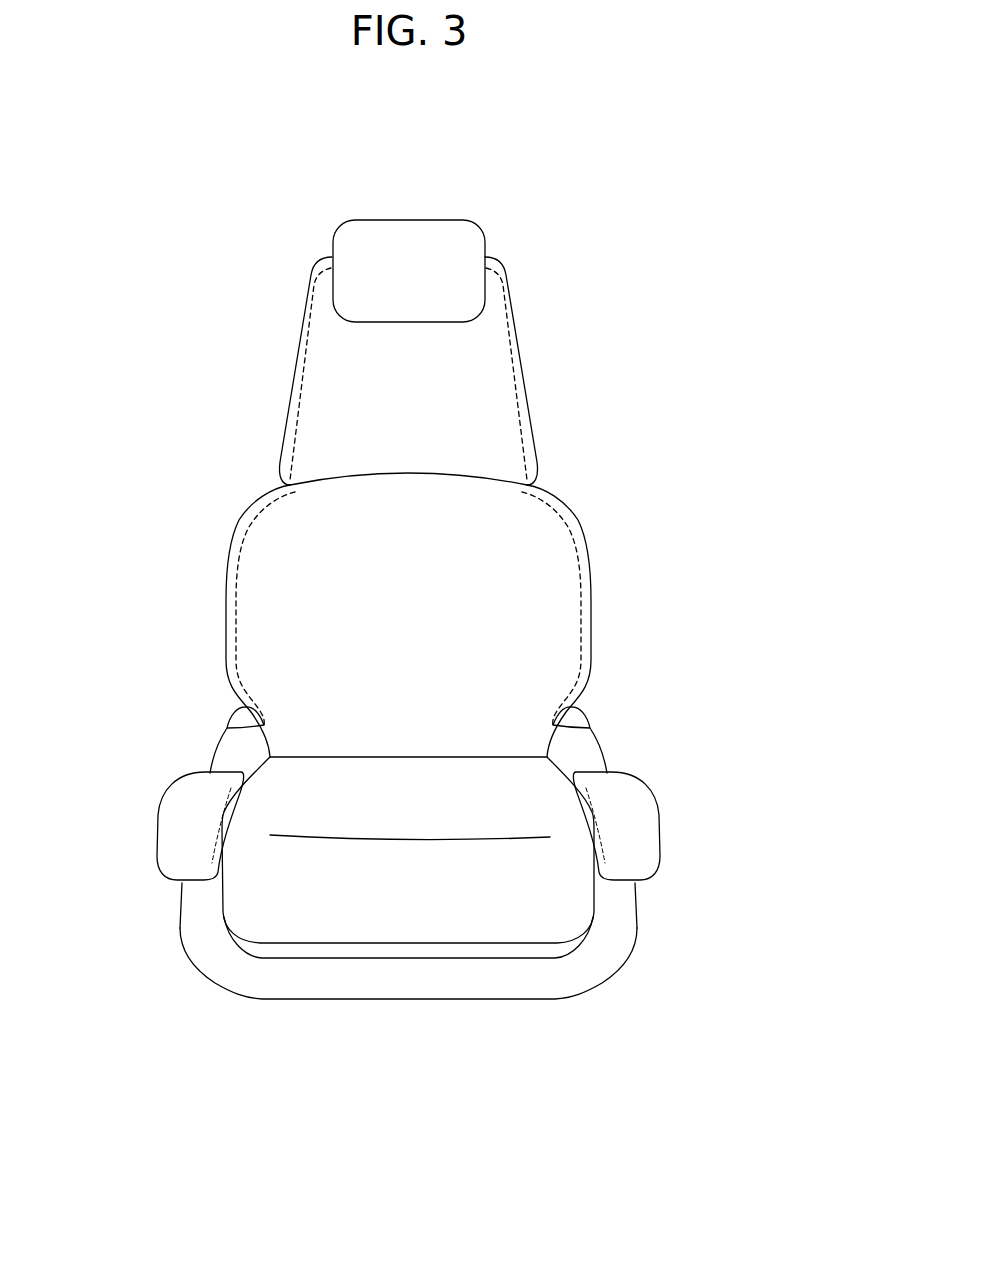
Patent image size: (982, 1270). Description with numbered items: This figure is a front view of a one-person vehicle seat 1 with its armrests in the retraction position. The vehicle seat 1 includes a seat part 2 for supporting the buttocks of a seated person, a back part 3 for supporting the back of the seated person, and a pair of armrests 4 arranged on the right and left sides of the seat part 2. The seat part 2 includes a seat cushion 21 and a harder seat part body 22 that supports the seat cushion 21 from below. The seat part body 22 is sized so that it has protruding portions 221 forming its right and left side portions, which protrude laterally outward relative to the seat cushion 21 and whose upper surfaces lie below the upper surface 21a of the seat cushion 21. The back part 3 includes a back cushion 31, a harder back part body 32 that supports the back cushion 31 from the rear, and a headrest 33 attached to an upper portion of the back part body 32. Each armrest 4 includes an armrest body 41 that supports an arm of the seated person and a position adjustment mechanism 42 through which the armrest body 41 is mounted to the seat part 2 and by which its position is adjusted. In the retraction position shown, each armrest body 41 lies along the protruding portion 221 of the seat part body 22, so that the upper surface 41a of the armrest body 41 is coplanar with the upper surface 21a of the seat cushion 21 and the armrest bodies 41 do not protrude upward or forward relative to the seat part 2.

The vehicle seat 1 is at (570, 242).
The seat part 2 is at (407, 869).
The seat cushion 21 is at (433, 847).
The upper surface of the seat cushion 21a is at (482, 780).
The seat part body 22 is at (407, 984).
The protruding portion 221 is at (192, 900).
The back part 3 is at (473, 488).
The back cushion 31 is at (451, 615).
The back part body 32 is at (512, 440).
The headrest 33 is at (460, 290).
The armrest 4 is at (410, 793).
The armrest body 41 is at (407, 826).
The upper surface of the armrest body 41a is at (190, 788).
The position adjustment mechanism 42 is at (200, 752).